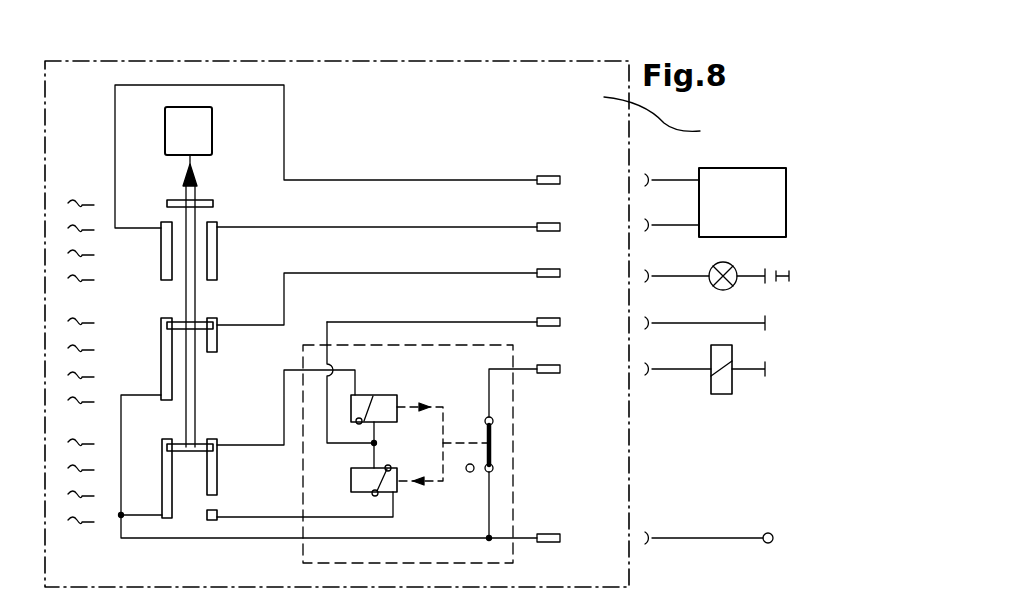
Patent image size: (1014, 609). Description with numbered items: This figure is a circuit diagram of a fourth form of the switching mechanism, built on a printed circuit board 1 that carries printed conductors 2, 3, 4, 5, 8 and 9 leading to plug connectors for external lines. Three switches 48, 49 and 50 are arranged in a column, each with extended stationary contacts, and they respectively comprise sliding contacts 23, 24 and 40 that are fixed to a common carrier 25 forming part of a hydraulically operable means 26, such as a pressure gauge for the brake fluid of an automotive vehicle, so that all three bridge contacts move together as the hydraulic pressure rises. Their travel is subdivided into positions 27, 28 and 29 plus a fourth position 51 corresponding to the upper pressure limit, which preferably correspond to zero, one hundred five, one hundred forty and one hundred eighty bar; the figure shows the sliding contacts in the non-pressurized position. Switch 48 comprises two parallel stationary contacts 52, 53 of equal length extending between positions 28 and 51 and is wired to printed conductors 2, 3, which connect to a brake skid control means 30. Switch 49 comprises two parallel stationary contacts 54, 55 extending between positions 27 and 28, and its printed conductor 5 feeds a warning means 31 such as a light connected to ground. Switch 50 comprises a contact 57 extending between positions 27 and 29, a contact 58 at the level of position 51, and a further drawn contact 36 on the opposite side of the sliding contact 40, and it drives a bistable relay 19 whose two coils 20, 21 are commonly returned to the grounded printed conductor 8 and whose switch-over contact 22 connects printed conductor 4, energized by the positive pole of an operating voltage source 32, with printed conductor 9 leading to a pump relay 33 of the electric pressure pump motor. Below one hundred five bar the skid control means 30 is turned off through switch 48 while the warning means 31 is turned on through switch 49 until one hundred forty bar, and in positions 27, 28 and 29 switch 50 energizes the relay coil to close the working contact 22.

The printed circuit board 1 is at (396, 96).
The printed conductor 2 is at (462, 179).
The printed conductor 3 is at (462, 227).
The printed conductor 4 is at (213, 540).
The printed conductor 5 is at (462, 273).
The printed conductor 8 is at (464, 322).
The printed conductor 9 is at (531, 378).
The bistable relay 19 is at (515, 558).
The coil 20 is at (387, 398).
The coil 21 is at (386, 466).
The switch-over contact 22 is at (492, 439).
The sliding contact 23 is at (198, 200).
The sliding contact 24 is at (202, 322).
The common carrier 25 is at (186, 162).
The hydraulically operable means 26 is at (288, 133).
The position 27 is at (69, 323).
The position 28 is at (69, 349).
The position 29 is at (69, 374).
The brake skid control means 30 is at (727, 173).
The warning means 31 is at (708, 284).
The operating voltage source 32 is at (768, 533).
The pump relay 33 is at (713, 355).
The contact 36 is at (163, 456).
The sliding contact 40 is at (190, 452).
The switch 48 is at (197, 218).
The switch 49 is at (190, 343).
The switch 50 is at (204, 487).
The fourth position 51 is at (69, 400).
The stationary contact 52 is at (161, 251).
The stationary contact 53 is at (217, 249).
The stationary contact 54 is at (161, 345).
The stationary contact 55 is at (212, 362).
The contact 57 is at (217, 486).
The contact 58 is at (207, 520).